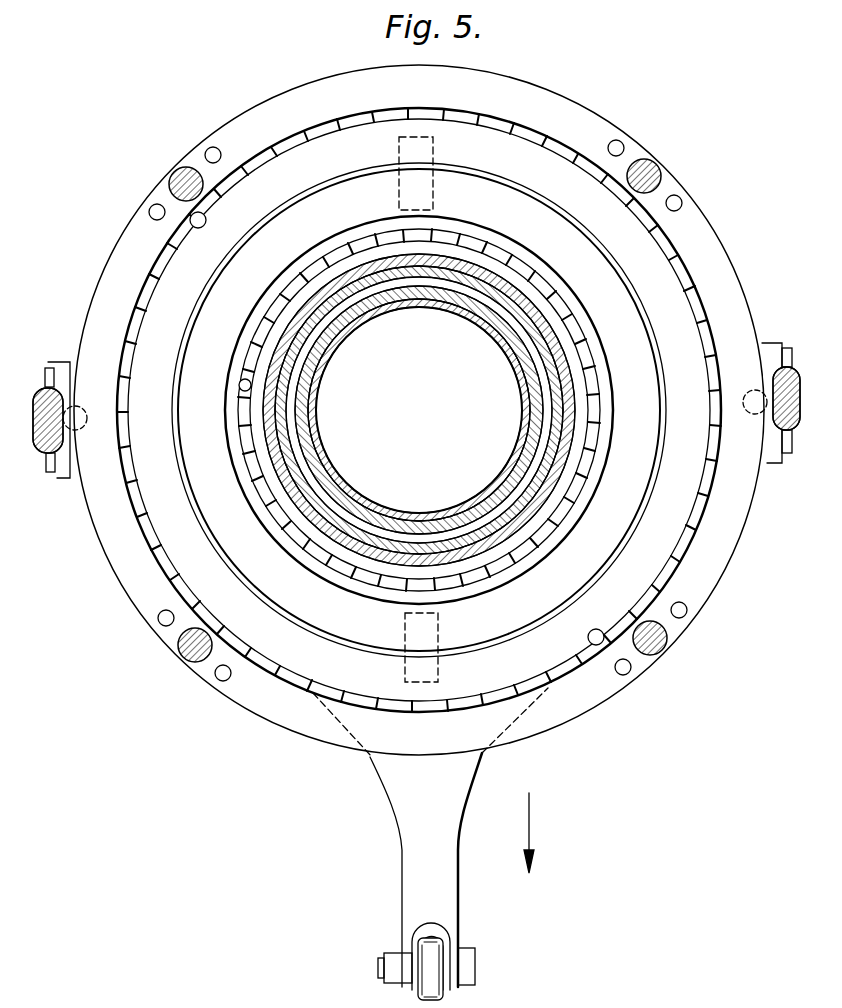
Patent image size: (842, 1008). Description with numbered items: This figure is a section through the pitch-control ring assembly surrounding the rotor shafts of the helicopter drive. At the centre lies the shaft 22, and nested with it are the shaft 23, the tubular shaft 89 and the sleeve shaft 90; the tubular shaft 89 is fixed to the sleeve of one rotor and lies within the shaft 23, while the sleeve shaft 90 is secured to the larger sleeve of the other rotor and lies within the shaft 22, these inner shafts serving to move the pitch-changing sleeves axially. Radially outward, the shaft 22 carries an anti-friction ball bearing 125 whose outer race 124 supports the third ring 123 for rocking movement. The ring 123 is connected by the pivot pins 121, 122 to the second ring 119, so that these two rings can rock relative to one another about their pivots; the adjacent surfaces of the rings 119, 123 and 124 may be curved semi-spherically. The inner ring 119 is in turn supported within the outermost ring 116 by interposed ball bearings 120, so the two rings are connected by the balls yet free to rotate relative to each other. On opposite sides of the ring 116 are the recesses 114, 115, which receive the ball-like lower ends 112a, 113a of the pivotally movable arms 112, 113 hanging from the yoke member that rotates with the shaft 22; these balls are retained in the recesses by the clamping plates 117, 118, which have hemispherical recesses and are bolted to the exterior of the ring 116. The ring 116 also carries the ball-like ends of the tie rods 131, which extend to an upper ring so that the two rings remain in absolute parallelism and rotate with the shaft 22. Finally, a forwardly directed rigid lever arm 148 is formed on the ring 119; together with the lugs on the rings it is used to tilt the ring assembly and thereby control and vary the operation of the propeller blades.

The shaft 22 is at (562, 368).
The shaft 23 is at (340, 332).
The tubular shaft 89 is at (318, 399).
The sleeve shaft 90 is at (324, 494).
The arm 112 is at (40, 392).
The ball-like lower end 112a is at (62, 478).
The arm 113 is at (790, 430).
The ball-like lower end 113a is at (768, 478).
The recess 114 is at (83, 433).
The recess 115 is at (753, 388).
The ring 116 is at (716, 540).
The clamping plate 117 is at (62, 370).
The clamping plate 118 is at (776, 352).
The second ring 119 is at (664, 556).
The ball bearings 120 is at (600, 655).
The pivot pin 121 is at (407, 680).
The pivot pin 122 is at (433, 145).
The third ring 123 is at (208, 495).
The outer race 124 is at (330, 580).
The anti-friction ball bearing 125 is at (348, 577).
The tie rod 131 is at (180, 178).
The lever arm 148 is at (438, 897).